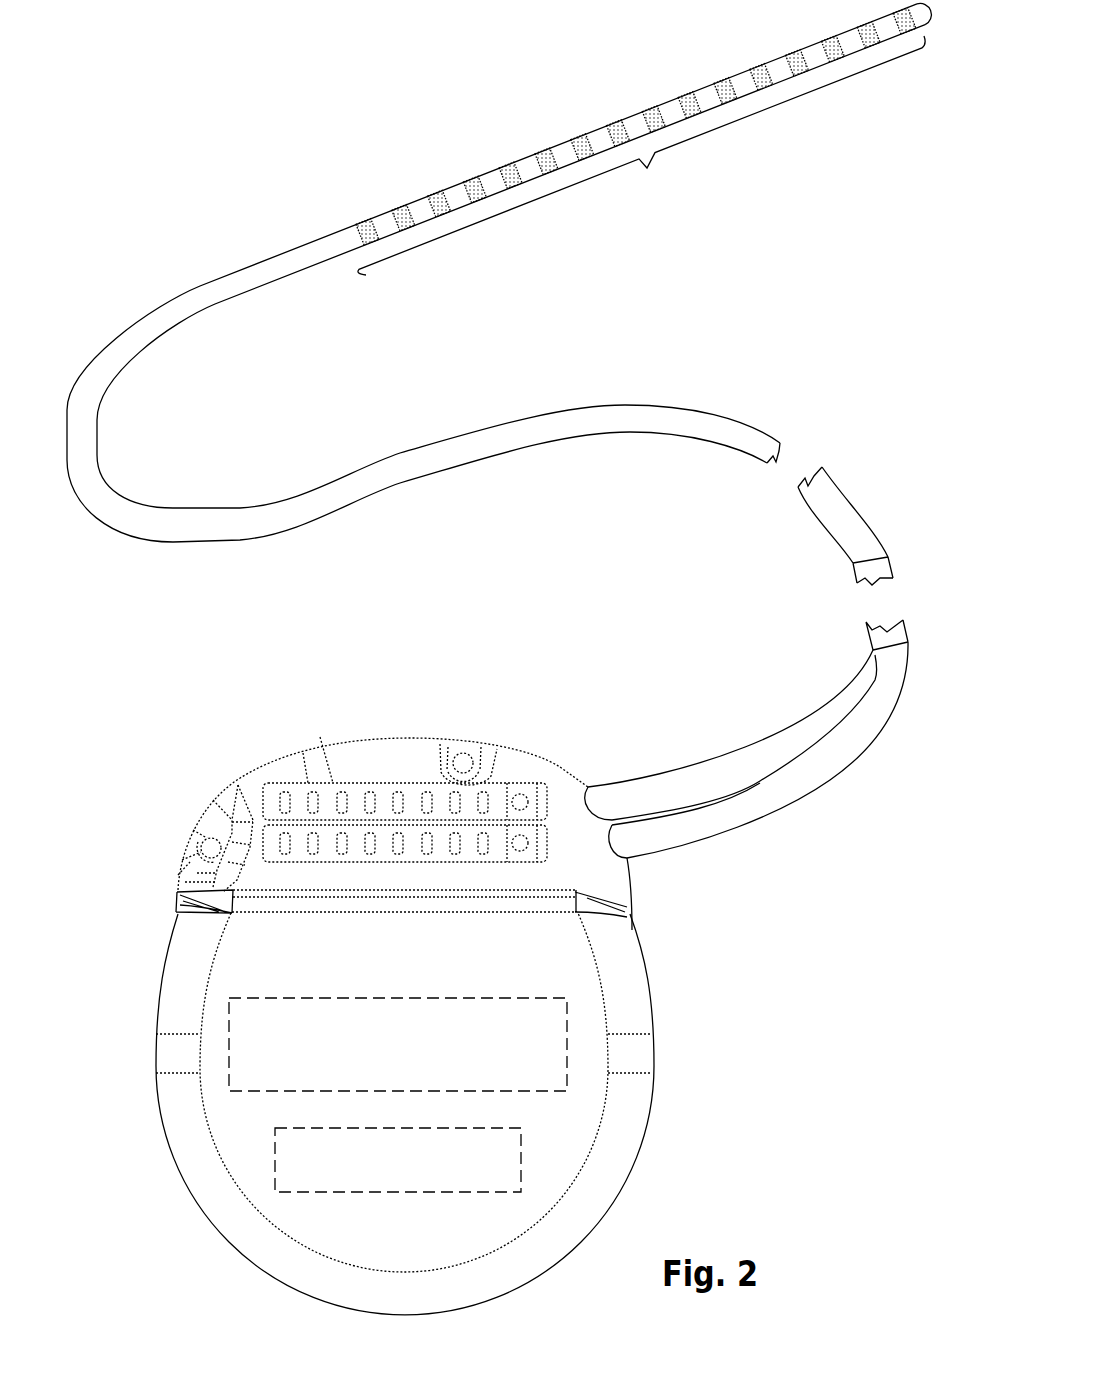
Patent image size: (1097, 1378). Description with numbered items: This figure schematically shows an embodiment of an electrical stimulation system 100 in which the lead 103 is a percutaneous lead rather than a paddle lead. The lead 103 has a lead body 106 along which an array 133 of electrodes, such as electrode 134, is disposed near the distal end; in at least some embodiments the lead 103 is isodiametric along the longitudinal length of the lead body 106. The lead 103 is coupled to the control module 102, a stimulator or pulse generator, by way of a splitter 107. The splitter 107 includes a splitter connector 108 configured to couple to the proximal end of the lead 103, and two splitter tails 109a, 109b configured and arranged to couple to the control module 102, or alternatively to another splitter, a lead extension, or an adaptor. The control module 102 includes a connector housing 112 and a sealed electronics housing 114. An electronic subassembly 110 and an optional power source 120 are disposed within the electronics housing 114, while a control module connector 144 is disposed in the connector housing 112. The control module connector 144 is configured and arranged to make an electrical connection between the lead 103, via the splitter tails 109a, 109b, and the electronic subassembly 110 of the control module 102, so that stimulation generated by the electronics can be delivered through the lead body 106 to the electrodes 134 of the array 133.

The electrical stimulation system 100 is at (188, 124).
The control module 102 is at (106, 760).
The lead 103 is at (115, 255).
The lead body 106 is at (680, 422).
The splitter 107 is at (762, 662).
The splitter connector 108 is at (858, 597).
The splitter tail 109a is at (740, 765).
The splitter tail 109b is at (830, 770).
The electronic subassembly 110 is at (249, 1050).
The connector housing 112 is at (203, 780).
The sealed electronics housing 114 is at (118, 976).
The power source 120 is at (297, 1165).
The array of electrodes 133 is at (641, 155).
The electrode 134 is at (685, 104).
The control module connector 144 is at (333, 783).